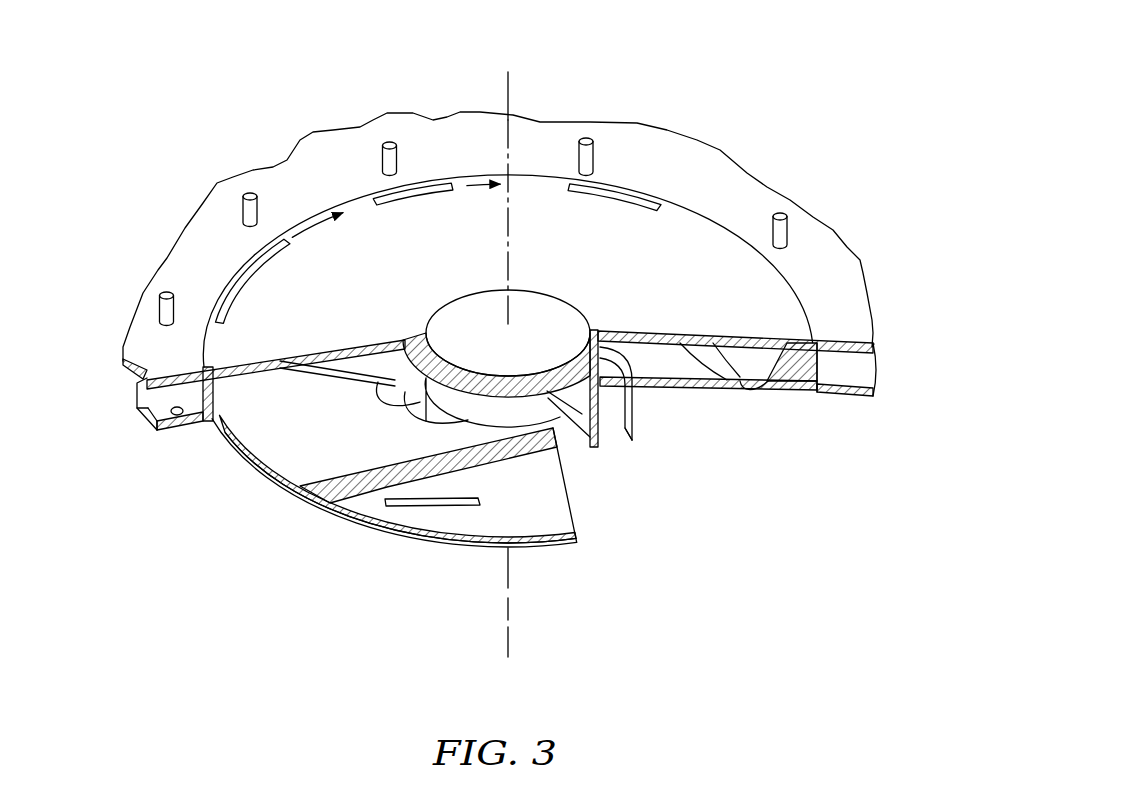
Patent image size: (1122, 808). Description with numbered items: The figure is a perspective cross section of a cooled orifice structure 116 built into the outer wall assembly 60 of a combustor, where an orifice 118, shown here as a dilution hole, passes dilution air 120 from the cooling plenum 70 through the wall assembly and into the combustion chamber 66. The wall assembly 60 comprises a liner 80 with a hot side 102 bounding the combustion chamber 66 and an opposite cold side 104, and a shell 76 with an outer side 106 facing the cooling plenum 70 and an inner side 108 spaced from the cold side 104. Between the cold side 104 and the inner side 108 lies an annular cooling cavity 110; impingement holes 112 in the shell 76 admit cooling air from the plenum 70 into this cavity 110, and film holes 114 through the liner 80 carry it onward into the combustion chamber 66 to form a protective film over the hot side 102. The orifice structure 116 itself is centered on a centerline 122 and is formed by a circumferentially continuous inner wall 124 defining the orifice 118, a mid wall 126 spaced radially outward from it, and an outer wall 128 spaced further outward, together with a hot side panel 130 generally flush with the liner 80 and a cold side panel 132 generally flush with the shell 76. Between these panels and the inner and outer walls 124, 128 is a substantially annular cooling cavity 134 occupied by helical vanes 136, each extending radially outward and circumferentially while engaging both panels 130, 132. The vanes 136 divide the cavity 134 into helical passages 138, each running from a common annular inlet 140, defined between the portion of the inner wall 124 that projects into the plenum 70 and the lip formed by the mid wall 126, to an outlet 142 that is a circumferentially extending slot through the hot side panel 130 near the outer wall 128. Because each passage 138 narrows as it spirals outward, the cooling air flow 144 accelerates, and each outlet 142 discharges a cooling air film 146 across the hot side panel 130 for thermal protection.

The wall assembly 60 is at (173, 443).
The combustion chamber 66 is at (268, 158).
The cooling plenum 70 is at (298, 578).
The shell 76 is at (152, 442).
The liner 80 is at (118, 363).
The hot side 102 is at (847, 340).
The cold side 104 is at (882, 345).
The outer side 106 is at (833, 393).
The inner side 108 is at (850, 370).
The annular cooling cavity 110 is at (185, 392).
The impingement holes 112 is at (137, 415).
The film holes 114 is at (380, 158).
The cooled orifice structure 116 is at (751, 80).
The orifice 118 is at (582, 364).
The dilution air 120 is at (523, 312).
The centerline 122 is at (511, 91).
The inner wall 124 is at (583, 432).
The mid wall 126 is at (637, 414).
The outer wall 128 is at (222, 398).
The hot side panel 130 is at (725, 237).
The cold side panel 132 is at (392, 540).
The annular cooling cavity 134 is at (332, 468).
The helical vanes 136 is at (417, 400).
The helical passages 138 is at (763, 343).
The inlet 140 is at (617, 440).
The outlets 142 is at (242, 291).
The cooling air flow 144 is at (305, 362).
The cooling air film 146 is at (309, 224).